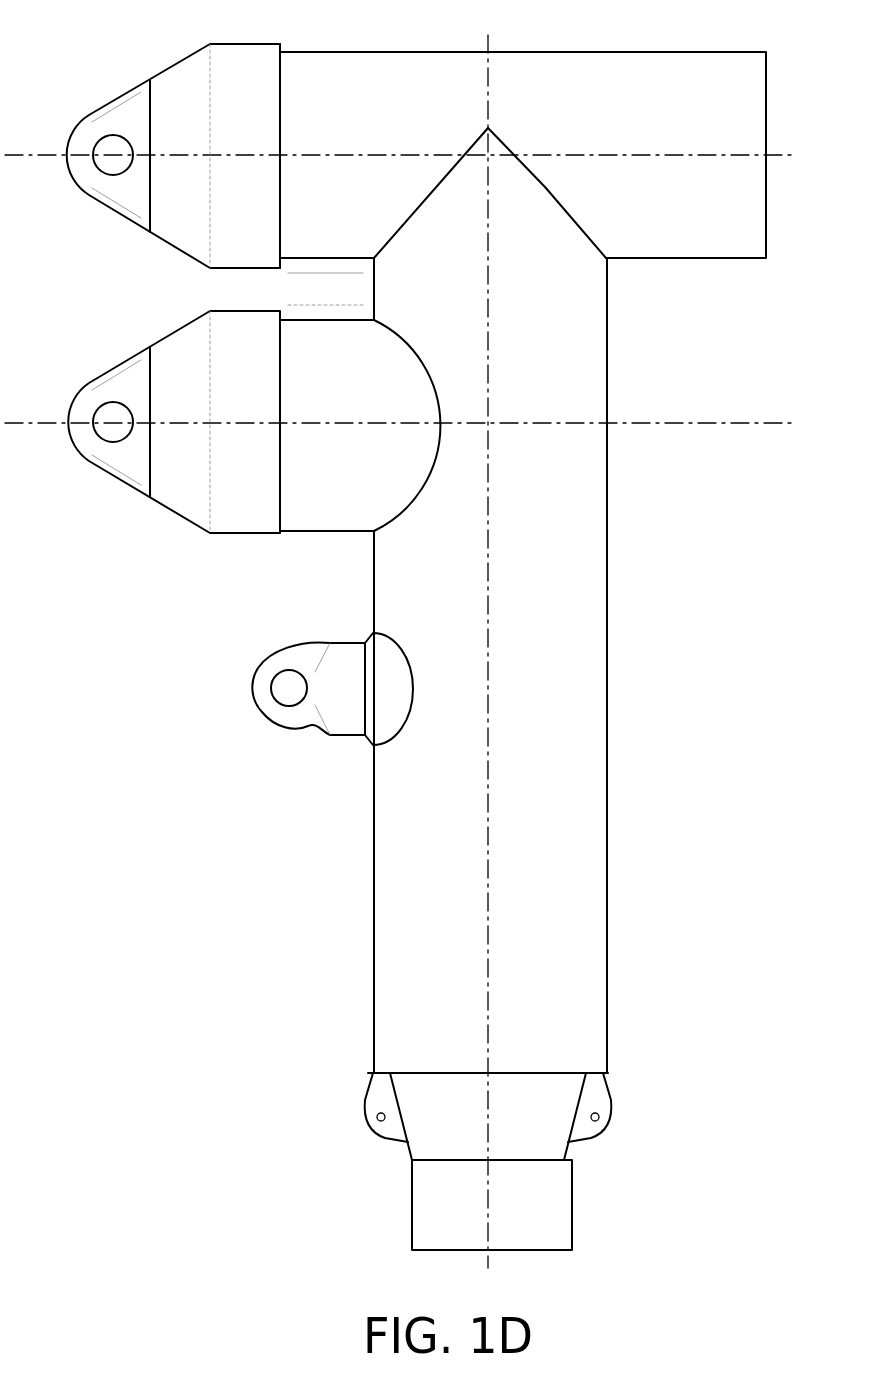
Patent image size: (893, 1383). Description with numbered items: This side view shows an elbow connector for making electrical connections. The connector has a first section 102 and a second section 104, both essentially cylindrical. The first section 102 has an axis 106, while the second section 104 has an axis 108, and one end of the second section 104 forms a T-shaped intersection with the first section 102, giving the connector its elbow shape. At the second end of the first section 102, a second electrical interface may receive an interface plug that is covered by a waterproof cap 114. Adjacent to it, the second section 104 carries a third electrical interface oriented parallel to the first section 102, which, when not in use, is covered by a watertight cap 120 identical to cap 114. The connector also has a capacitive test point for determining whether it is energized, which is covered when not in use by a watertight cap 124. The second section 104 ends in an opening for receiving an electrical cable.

The first section 102 is at (523, 538).
The second section 104 is at (231, 1068).
The axis 106 is at (652, 157).
The axis 108 is at (488, 917).
The cap 114 is at (183, 175).
The watertight cap 120 is at (185, 452).
The watertight cap 124 is at (322, 702).